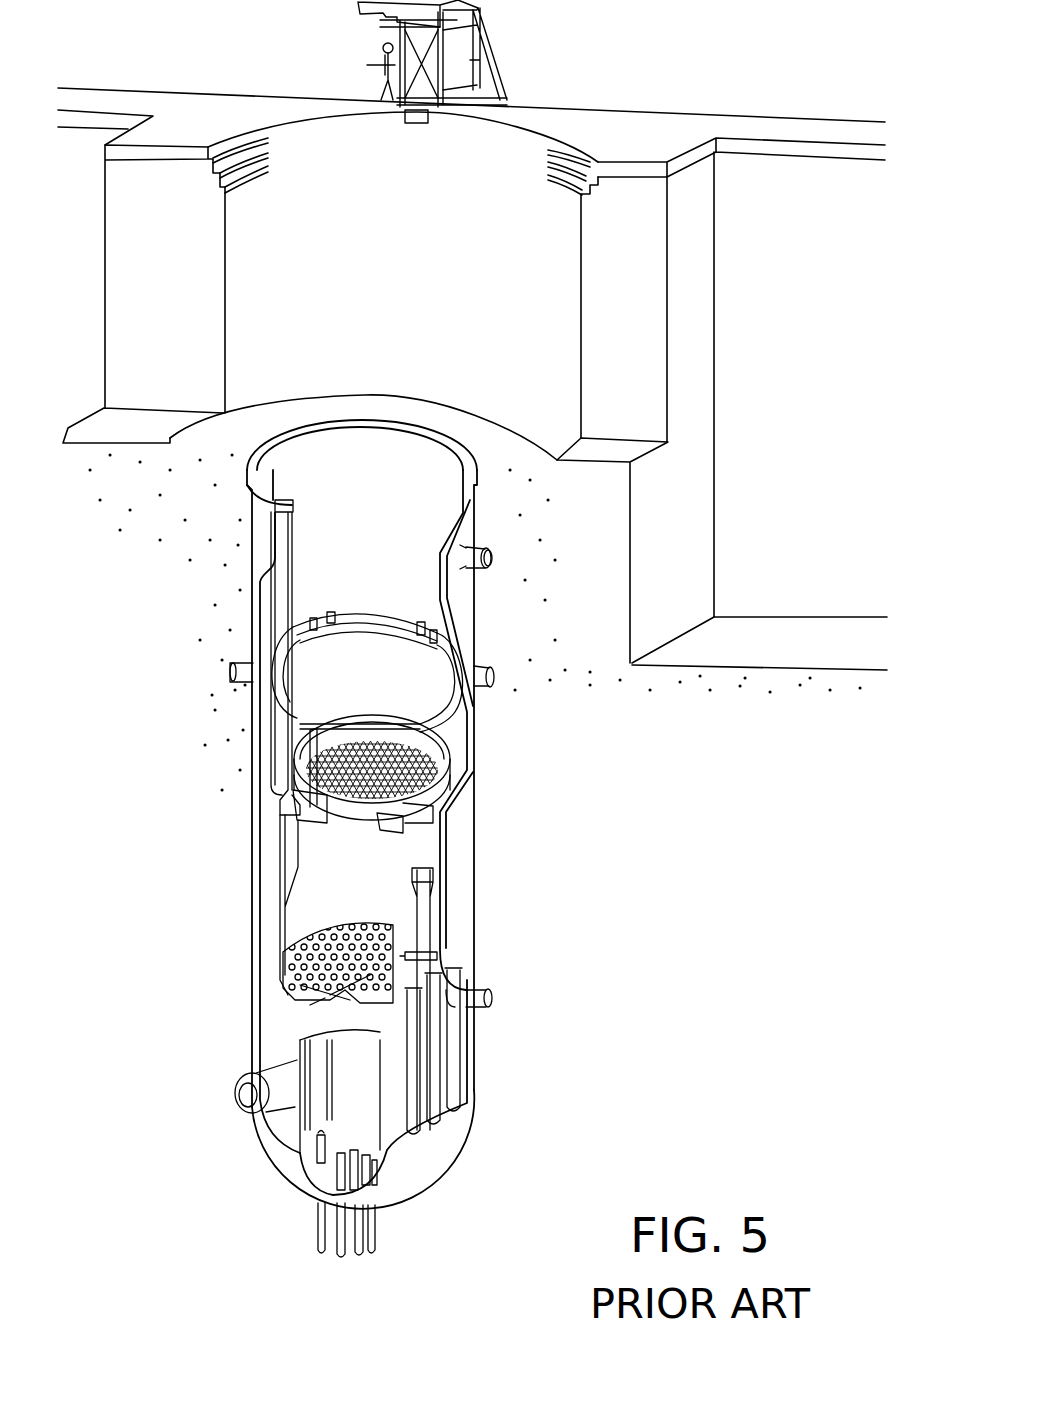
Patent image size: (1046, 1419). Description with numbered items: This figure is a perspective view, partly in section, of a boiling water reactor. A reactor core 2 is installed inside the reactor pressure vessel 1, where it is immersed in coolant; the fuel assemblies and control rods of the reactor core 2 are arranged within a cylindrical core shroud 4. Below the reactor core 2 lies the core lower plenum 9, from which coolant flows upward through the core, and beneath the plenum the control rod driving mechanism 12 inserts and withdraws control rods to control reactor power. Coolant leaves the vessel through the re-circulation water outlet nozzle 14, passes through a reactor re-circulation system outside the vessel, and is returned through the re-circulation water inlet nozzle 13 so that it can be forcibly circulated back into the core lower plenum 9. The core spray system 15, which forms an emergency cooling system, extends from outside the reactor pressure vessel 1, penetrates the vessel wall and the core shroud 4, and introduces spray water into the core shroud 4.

The reactor pressure vessel 1 is at (478, 850).
The reactor core 2 is at (336, 890).
The core shroud 4 is at (280, 852).
The core lower plenum 9 is at (343, 1105).
The control rod driving mechanism 12 is at (333, 1237).
The re-circulation water inlet nozzle 13 is at (493, 1000).
The re-circulation water outlet nozzle 14 is at (233, 1083).
The core spray system 15 is at (460, 714).